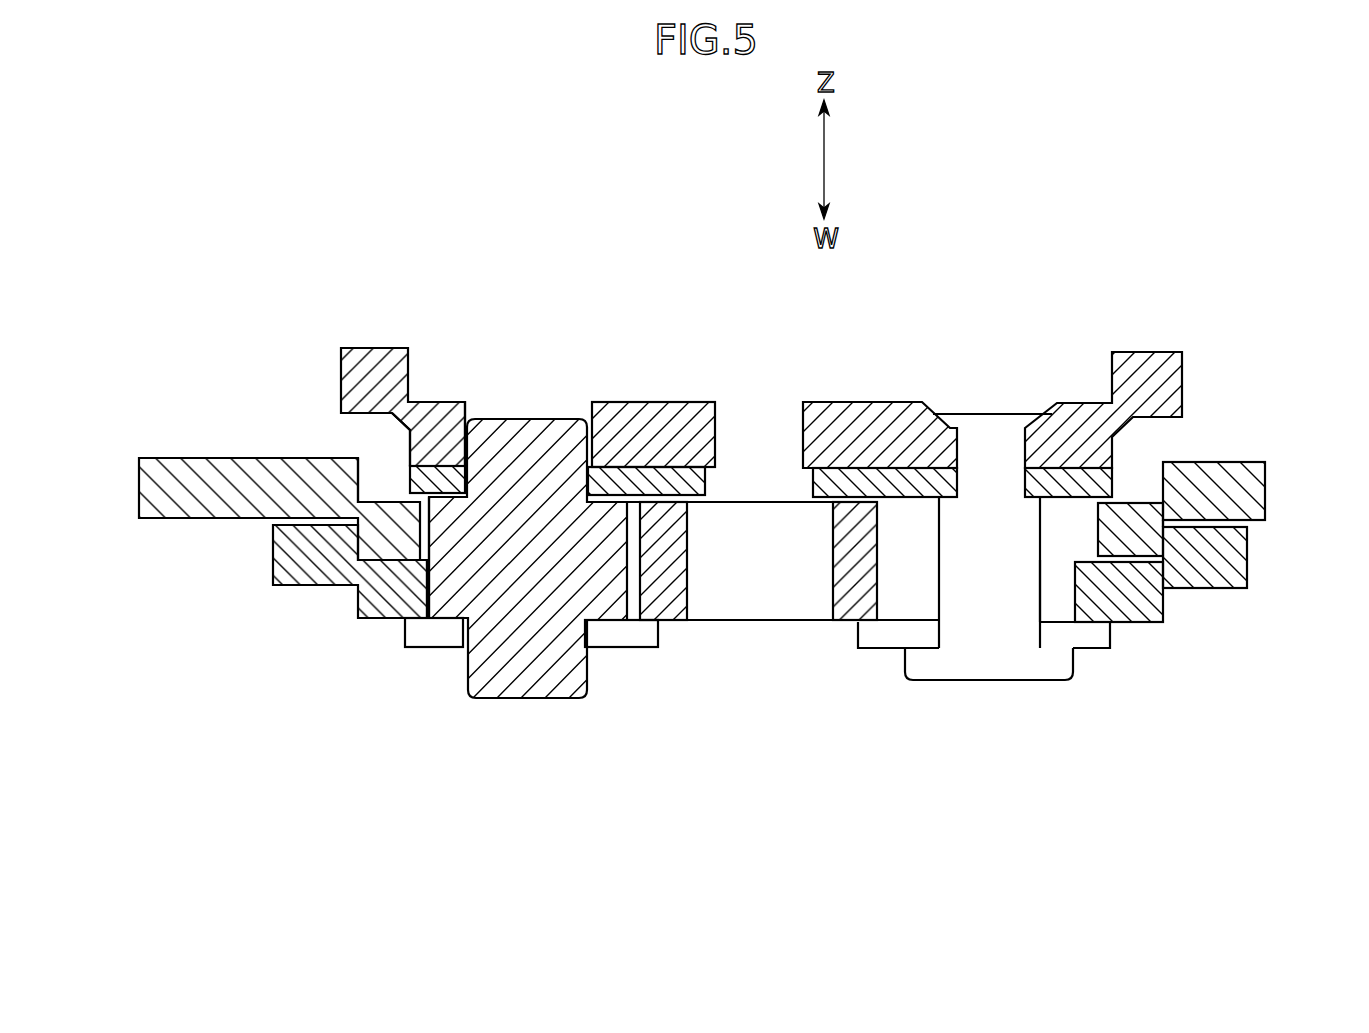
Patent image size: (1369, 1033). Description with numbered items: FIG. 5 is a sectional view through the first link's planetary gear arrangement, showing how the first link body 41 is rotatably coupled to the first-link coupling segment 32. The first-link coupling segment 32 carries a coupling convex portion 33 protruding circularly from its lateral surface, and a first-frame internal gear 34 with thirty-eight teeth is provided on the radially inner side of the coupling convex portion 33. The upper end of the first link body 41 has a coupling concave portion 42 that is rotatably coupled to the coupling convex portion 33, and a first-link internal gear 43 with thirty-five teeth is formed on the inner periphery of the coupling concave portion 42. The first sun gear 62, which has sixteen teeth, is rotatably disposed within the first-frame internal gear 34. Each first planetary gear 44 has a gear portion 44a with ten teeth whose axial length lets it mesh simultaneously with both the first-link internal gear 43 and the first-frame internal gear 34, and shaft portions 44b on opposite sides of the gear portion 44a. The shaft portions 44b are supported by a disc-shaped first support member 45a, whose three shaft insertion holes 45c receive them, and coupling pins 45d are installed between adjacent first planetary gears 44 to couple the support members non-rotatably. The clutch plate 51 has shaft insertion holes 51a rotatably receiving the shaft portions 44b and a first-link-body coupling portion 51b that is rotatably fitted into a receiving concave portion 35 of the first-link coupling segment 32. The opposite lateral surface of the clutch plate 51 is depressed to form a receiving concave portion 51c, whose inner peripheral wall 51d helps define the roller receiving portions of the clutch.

The first-link coupling segment 32 is at (158, 487).
The coupling convex portion 33 is at (1140, 562).
The first-frame internal gear 34 is at (428, 553).
The receiving concave portion 35 is at (383, 487).
The first link body 41 is at (1233, 579).
The coupling concave portion 42 is at (1163, 613).
The first-link internal gear 43 is at (428, 607).
The first planetary gear 44 is at (527, 600).
The gear portion 44a is at (430, 572).
The shaft portion 44b is at (543, 427).
The first support member 45a is at (425, 640).
The shaft insertion hole 45c is at (588, 648).
The coupling pin 45d is at (993, 680).
The clutch plate 51 is at (370, 348).
The shaft insertion hole 51a is at (467, 418).
The first-link-body coupling portion 51b is at (407, 441).
The receiving concave portion 51c is at (1080, 380).
The inner peripheral wall 51d is at (412, 398).
The first sun gear 62 is at (670, 580).